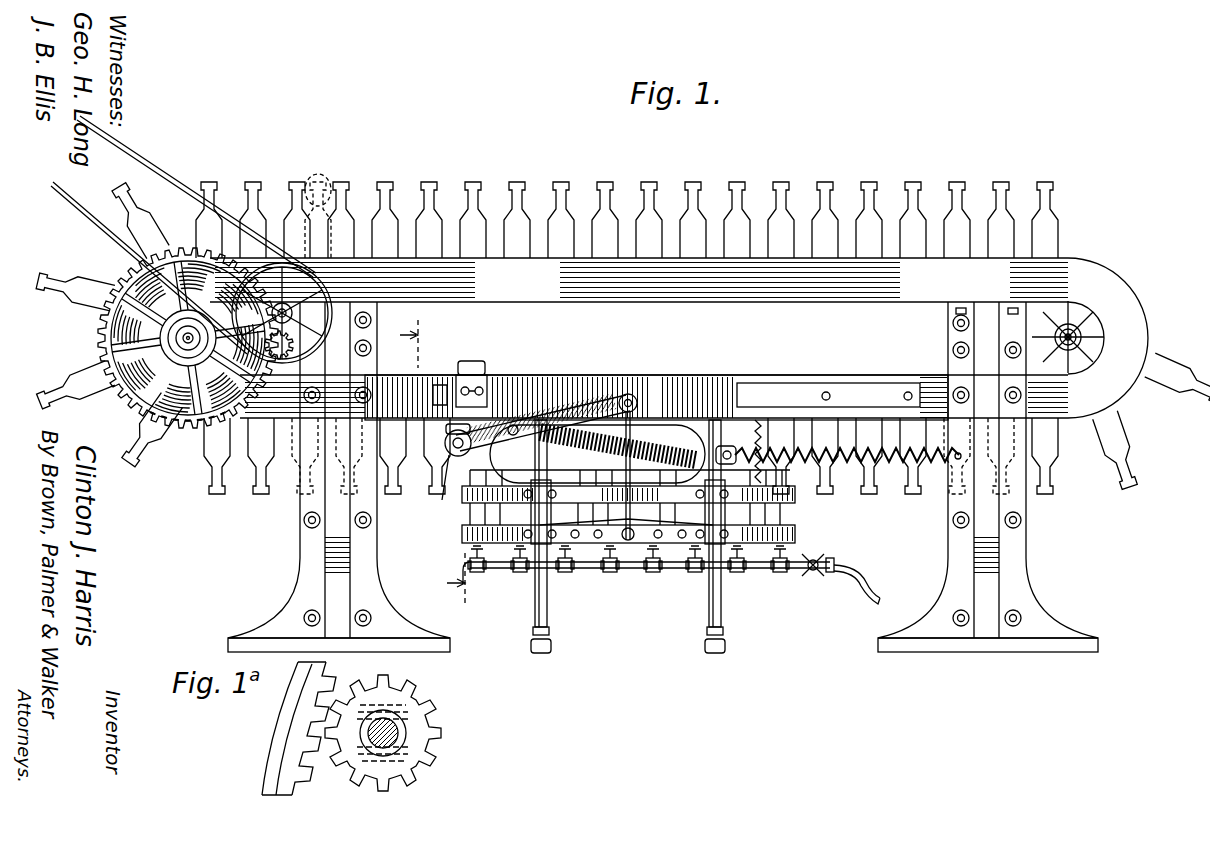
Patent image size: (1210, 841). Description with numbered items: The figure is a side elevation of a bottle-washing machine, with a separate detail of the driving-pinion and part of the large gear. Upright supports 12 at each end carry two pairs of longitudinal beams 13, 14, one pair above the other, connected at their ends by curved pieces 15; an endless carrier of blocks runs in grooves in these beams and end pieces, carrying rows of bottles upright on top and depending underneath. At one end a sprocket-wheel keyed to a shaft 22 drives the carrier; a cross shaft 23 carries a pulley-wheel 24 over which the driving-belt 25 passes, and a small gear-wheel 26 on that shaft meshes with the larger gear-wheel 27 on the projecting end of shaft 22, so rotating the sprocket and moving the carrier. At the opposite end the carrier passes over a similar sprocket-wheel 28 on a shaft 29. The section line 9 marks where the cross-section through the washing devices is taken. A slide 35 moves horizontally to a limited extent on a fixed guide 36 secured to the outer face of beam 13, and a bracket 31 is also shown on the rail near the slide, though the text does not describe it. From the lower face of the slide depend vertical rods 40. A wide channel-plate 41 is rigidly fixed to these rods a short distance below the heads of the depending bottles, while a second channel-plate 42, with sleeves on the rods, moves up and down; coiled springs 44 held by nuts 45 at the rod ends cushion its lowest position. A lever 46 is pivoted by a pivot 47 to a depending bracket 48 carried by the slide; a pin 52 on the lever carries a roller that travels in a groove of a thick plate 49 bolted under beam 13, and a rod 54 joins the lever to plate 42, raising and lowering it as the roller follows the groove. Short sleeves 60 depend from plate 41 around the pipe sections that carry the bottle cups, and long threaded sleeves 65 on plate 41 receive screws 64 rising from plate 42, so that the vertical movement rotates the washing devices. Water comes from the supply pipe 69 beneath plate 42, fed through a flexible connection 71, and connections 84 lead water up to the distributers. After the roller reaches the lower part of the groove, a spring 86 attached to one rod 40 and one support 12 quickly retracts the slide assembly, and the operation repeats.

In FIG. 1, the section line 9 is at (434, 462).
In FIG. 1, the support 12 is at (1062, 556).
In FIG. 1, the longitudinal beam 13 is at (934, 388).
In FIG. 1, the longitudinal beam 14 is at (679, 338).
In FIG. 1, the curved piece 15 is at (150, 384).
In FIG. 1, the shaft 22 is at (200, 340).
In FIG. 1, the shaft 23 is at (296, 332).
In FIG. 1A, the shaft 23 is at (392, 742).
In FIG. 1, the pulley-wheel 24 is at (282, 265).
In FIG. 1, the driving-belt 25 is at (178, 186).
In FIG. 1, the small gear-wheel 26 is at (318, 216).
In FIG. 1A, the small gear-wheel 26 is at (428, 742).
In FIG. 1, the larger gear-wheel 27 is at (186, 428).
In FIG. 1A, the larger gear-wheel 27 is at (308, 745).
In FIG. 1, the sprocket-wheel 28 is at (1092, 330).
In FIG. 1, the shaft 29 is at (1069, 324).
In FIG. 1, the bracket 31 is at (474, 362).
In FIG. 1, the slide 35 is at (732, 383).
In FIG. 1, the fixed guide 36 is at (850, 390).
In FIG. 1, the vertical rod 40 is at (548, 608).
In FIG. 1, the channel-plate 41 is at (785, 494).
In FIG. 1, the channel-plate 42 is at (790, 528).
In FIG. 1, the coiled spring 44 is at (550, 631).
In FIG. 1, the nut 45 is at (548, 652).
In FIG. 1, the lever 46 is at (590, 408).
In FIG. 1, the pivot 47 is at (452, 476).
In FIG. 1, the depending bracket 48 is at (452, 428).
In FIG. 1, the plate 49 is at (702, 435).
In FIG. 1, the pin 52 is at (516, 424).
In FIG. 1, the rod 54 is at (640, 402).
In FIG. 1, the sleeve 60 is at (780, 514).
In FIG. 1, the screw 64 is at (762, 432).
In FIG. 1, the sleeve 65 is at (756, 572).
In FIG. 1, the water-supply pipe 69 is at (768, 572).
In FIG. 1, the flexible connection 71 is at (862, 590).
In FIG. 1, the connection 84 is at (522, 552).
In FIG. 1, the spring 86 is at (897, 472).